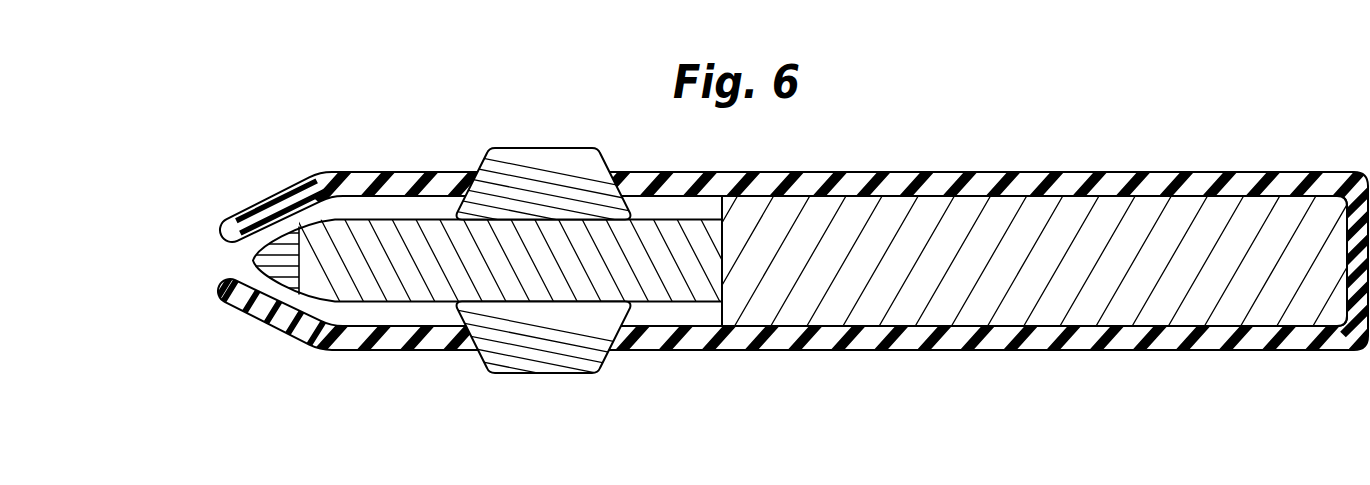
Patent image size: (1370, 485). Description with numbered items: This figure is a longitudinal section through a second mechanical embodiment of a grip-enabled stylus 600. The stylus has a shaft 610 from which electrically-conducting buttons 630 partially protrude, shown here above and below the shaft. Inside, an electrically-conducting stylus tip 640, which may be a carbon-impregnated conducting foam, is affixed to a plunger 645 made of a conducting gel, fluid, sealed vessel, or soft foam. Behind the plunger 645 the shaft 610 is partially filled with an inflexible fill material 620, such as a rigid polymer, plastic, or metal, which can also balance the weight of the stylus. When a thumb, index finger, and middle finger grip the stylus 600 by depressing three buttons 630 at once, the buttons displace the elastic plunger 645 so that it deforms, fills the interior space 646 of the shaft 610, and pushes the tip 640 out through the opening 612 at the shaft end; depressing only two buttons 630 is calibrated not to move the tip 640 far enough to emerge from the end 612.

The grip-enabled stylus 600 is at (176, 203).
The shaft 610 is at (333, 176).
The opening 612 is at (237, 307).
The inflexible fill material 620 is at (1094, 212).
The electrically-conducting buttons 630 is at (578, 168).
The stylus tip 640 is at (253, 261).
The plunger 645 is at (403, 238).
The interior space 646 is at (672, 205).